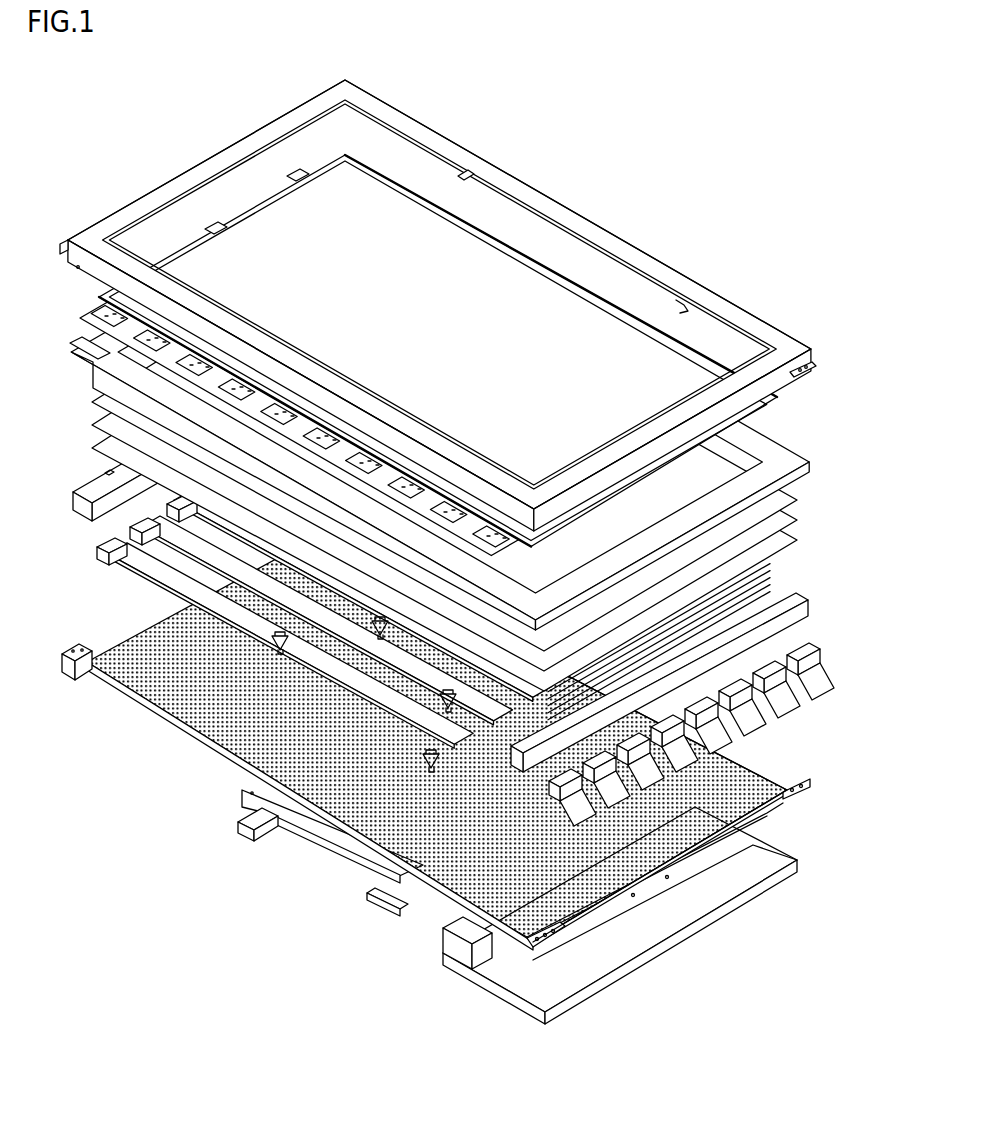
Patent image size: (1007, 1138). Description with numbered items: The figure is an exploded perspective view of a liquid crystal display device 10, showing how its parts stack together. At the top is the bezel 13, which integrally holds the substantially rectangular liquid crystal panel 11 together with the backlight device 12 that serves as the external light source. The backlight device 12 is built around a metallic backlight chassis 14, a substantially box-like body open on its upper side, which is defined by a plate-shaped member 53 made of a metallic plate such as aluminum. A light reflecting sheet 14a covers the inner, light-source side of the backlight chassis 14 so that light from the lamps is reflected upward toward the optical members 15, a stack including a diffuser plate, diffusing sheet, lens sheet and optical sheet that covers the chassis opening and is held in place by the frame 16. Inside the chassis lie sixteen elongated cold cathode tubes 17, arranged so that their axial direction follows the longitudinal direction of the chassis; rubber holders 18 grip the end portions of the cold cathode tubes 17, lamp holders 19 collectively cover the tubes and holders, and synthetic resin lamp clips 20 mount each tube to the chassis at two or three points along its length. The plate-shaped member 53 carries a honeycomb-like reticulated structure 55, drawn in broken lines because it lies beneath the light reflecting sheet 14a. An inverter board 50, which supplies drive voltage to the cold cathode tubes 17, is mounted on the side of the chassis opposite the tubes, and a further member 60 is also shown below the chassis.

The liquid crystal display device 10 is at (635, 93).
The liquid crystal panel 11 is at (257, 205).
The backlight device 12 is at (842, 803).
The bezel 13 is at (642, 245).
The backlight chassis 14 is at (430, 798).
The light reflecting sheet 14a is at (587, 902).
The optical members 15 is at (797, 493).
The frame 16 is at (795, 445).
The cold cathode tubes 17 is at (173, 547).
The holders 18 is at (143, 524).
The lamp holders 19 is at (93, 487).
The lamp clips 20 is at (195, 805).
The inverter board 50 is at (705, 850).
The plate-shaped member 53 is at (137, 650).
The reticulated structure 55 is at (353, 793).
The cover 60 is at (660, 915).